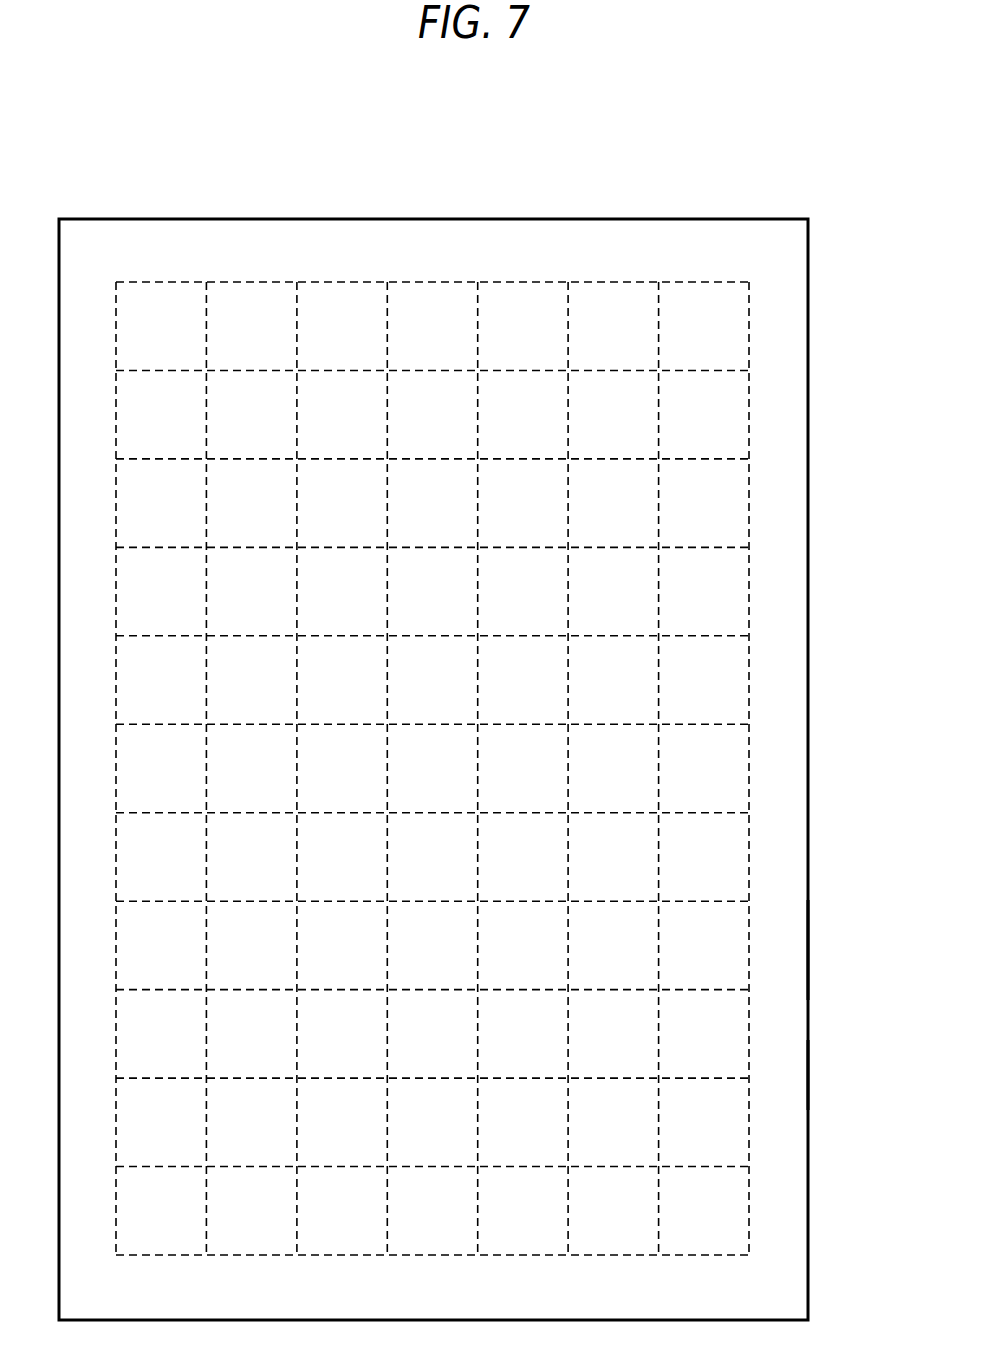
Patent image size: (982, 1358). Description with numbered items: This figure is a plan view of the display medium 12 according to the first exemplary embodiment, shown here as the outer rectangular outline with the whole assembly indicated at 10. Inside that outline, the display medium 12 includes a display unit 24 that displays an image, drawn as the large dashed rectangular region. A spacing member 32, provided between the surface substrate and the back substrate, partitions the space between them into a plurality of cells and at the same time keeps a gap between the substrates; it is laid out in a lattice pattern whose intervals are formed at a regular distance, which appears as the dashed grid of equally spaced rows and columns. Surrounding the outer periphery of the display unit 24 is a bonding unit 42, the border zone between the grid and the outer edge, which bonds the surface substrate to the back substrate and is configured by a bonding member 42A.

The display device 10 is at (755, 154).
The display medium 12 is at (613, 208).
The display unit 24 is at (498, 768).
The spacing member 32 is at (713, 548).
The bonding unit 42 is at (777, 965).
The bonding member 42A is at (782, 1075).